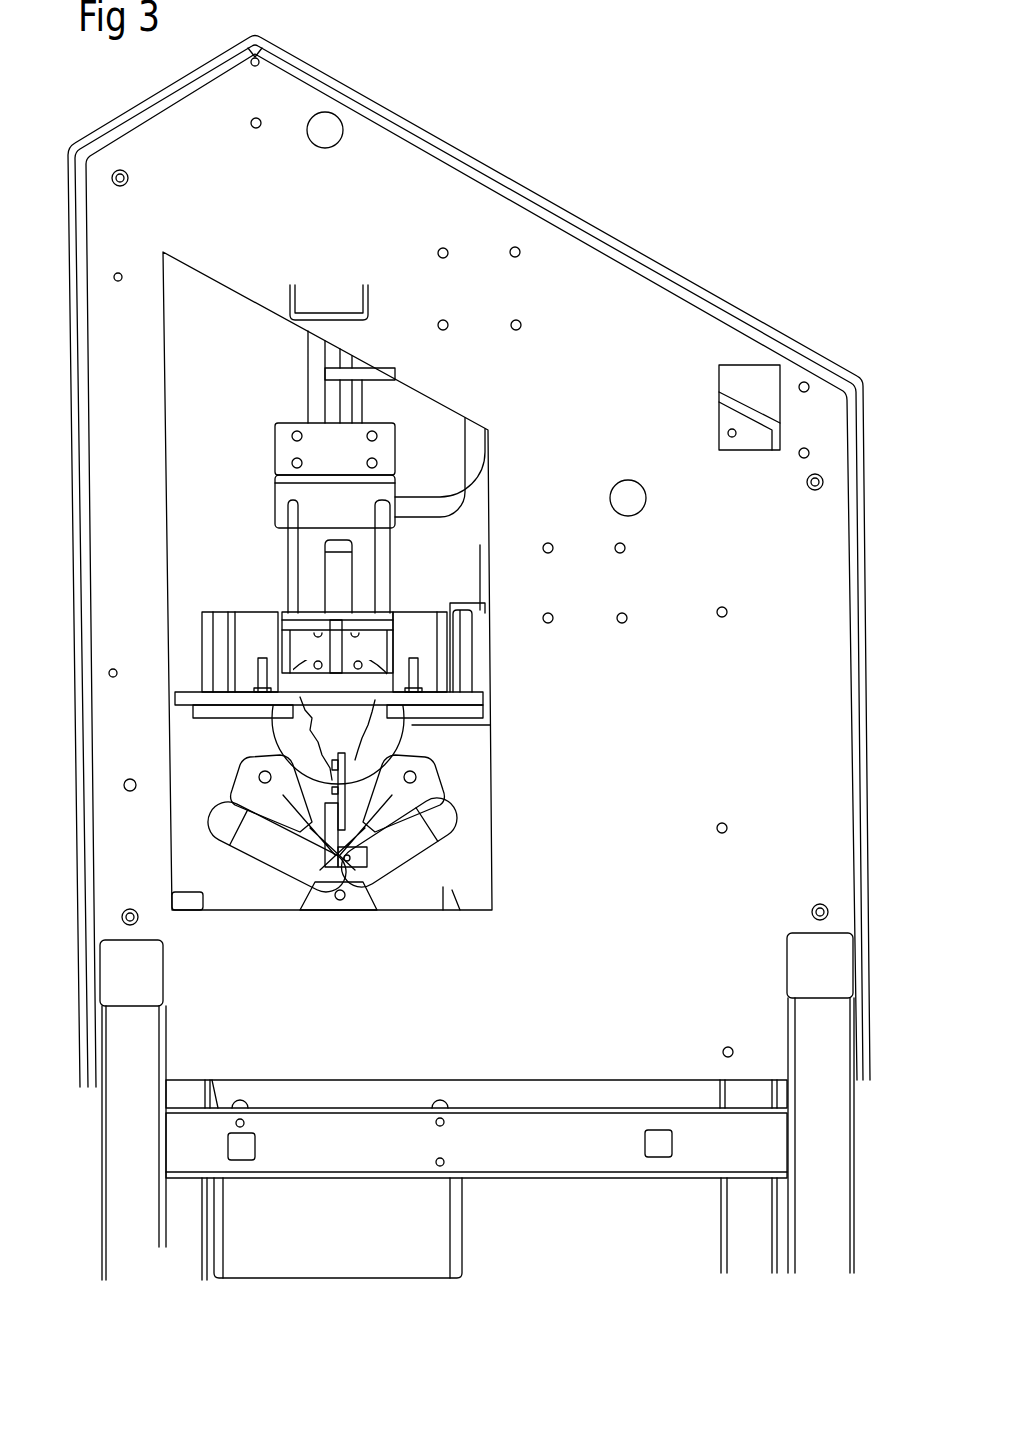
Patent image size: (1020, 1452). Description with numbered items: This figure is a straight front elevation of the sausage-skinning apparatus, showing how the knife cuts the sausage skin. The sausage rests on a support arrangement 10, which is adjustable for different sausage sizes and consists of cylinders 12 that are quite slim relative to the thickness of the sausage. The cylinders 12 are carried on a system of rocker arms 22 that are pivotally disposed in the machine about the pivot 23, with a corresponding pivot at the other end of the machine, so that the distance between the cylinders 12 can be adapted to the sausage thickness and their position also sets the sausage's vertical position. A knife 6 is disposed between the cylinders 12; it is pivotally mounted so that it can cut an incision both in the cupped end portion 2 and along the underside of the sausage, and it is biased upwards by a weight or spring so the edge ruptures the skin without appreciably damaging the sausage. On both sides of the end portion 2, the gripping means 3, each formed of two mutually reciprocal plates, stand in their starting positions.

The end portion 2 is at (330, 712).
The gripping means 3 is at (171, 729).
The knife 6 is at (337, 772).
The support arrangement 10 is at (187, 852).
The cylinders 12 is at (412, 737).
The rocker arms 22 is at (300, 872).
The pivot 23 is at (342, 897).